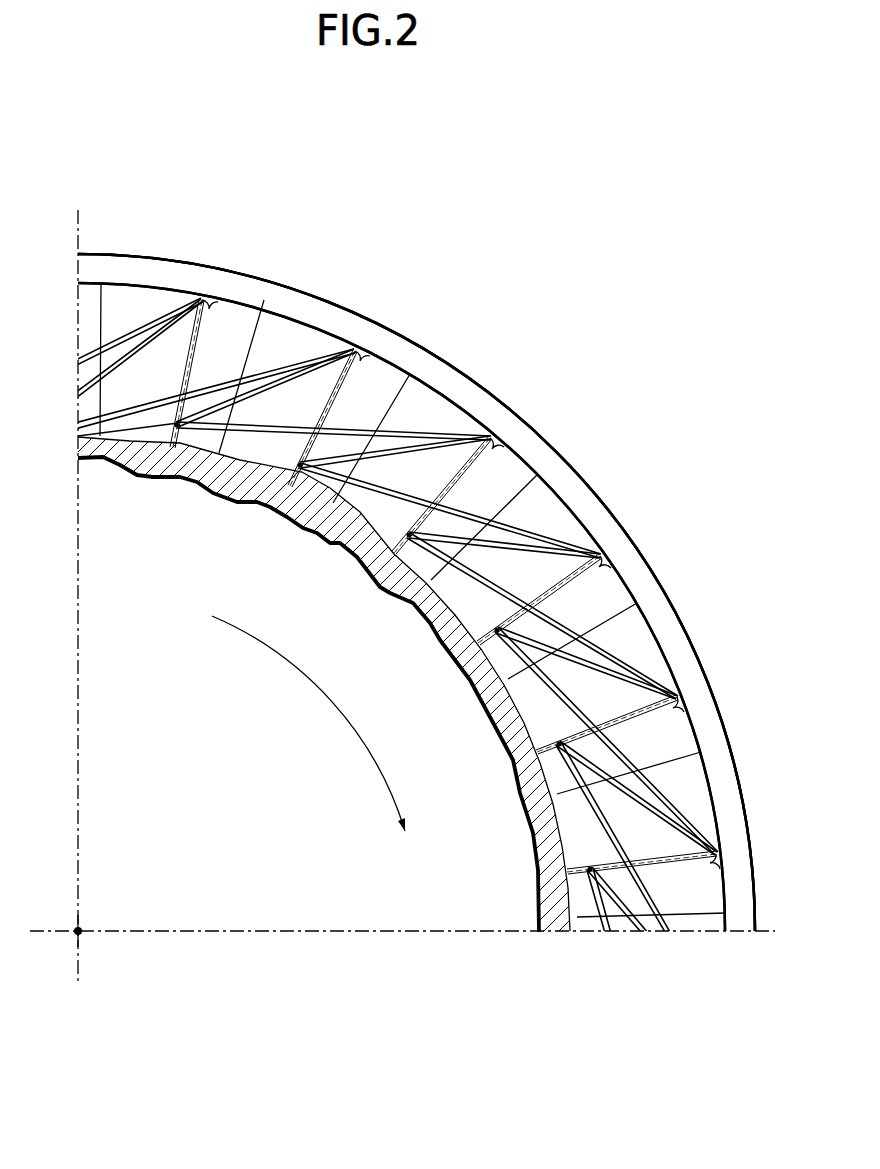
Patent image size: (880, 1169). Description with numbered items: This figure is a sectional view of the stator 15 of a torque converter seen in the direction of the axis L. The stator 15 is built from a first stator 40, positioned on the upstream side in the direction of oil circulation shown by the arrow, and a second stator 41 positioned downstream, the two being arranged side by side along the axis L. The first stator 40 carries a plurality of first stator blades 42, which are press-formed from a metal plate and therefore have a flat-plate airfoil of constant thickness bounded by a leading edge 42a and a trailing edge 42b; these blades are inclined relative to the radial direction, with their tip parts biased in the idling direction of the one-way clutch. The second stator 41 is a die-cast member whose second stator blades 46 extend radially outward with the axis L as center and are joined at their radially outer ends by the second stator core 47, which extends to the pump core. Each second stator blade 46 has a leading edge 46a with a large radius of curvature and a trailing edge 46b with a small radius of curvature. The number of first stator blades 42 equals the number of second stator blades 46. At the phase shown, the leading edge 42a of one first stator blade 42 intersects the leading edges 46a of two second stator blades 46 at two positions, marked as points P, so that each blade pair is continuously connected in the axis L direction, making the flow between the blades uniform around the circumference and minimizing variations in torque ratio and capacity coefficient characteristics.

The stator 15 is at (466, 222).
The first stator 40 is at (314, 344).
The second stator 41 is at (452, 356).
The first stator blade 42 is at (359, 733).
The leading edge 42a is at (313, 388).
The trailing edge 42b is at (225, 373).
The second stator blade 46 is at (444, 648).
The leading edge 46a is at (313, 408).
The trailing edge 46b is at (388, 410).
The second stator core 47 is at (592, 480).
The point P is at (481, 581).
The axis L is at (74, 935).